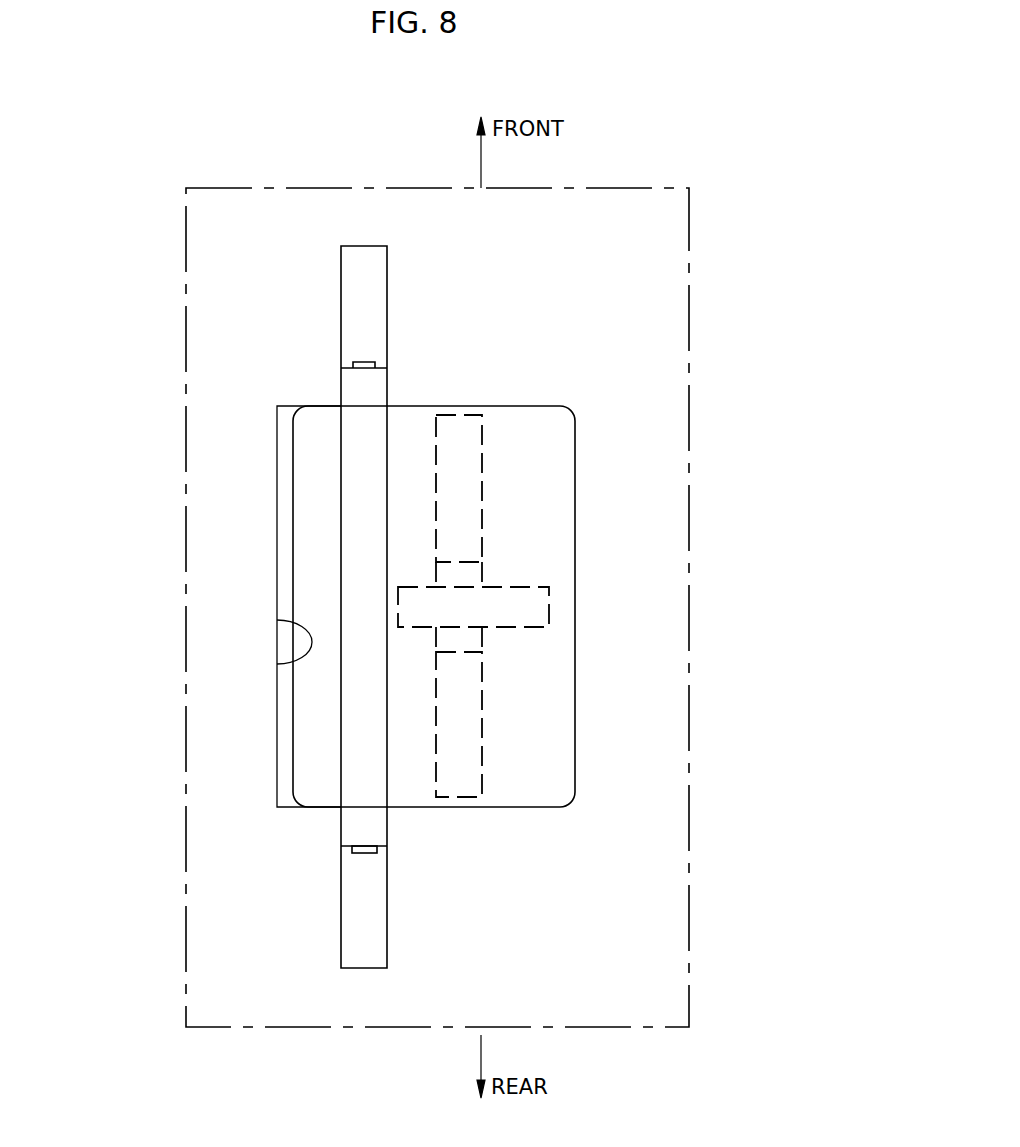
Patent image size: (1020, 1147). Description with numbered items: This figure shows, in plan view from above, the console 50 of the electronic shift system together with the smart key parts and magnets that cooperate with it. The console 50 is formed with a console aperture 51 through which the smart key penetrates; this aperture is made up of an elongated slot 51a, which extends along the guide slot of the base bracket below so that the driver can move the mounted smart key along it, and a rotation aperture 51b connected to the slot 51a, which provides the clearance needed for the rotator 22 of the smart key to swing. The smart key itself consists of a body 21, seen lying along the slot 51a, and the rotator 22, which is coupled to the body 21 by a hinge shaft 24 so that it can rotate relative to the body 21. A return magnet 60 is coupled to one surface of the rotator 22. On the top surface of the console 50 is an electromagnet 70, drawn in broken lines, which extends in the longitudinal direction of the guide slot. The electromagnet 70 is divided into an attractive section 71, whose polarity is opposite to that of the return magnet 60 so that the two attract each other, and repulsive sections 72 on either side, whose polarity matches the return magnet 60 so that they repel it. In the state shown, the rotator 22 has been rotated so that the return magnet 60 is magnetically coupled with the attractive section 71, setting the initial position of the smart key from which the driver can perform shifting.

The console 50 is at (232, 866).
The console aperture 51 is at (341, 247).
The slot 51a is at (387, 283).
The rotation aperture 51b is at (277, 667).
The body 21 is at (355, 385).
The hinge shaft 24 is at (356, 360).
The rotator 22 is at (540, 701).
The return magnet 60 is at (527, 607).
The electromagnet 70 is at (482, 500).
The attractive section 71 is at (465, 572).
The repulsive sections 72 is at (465, 448).